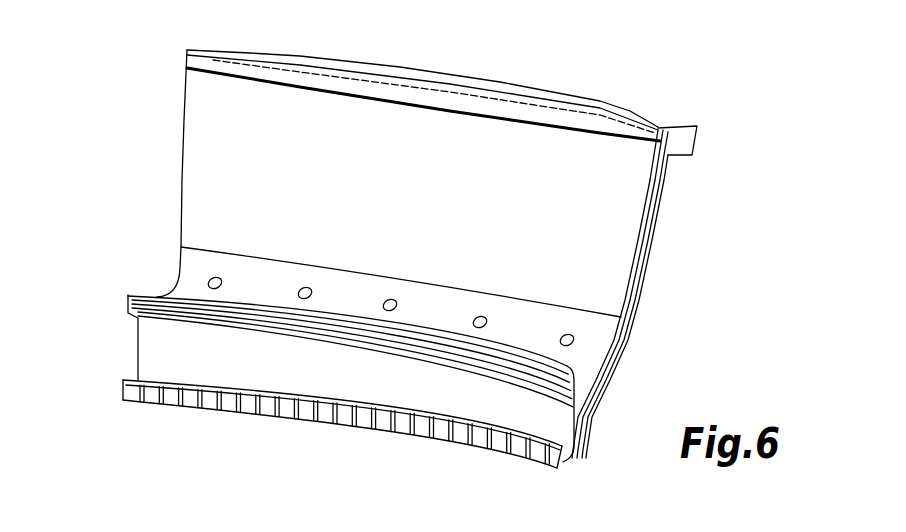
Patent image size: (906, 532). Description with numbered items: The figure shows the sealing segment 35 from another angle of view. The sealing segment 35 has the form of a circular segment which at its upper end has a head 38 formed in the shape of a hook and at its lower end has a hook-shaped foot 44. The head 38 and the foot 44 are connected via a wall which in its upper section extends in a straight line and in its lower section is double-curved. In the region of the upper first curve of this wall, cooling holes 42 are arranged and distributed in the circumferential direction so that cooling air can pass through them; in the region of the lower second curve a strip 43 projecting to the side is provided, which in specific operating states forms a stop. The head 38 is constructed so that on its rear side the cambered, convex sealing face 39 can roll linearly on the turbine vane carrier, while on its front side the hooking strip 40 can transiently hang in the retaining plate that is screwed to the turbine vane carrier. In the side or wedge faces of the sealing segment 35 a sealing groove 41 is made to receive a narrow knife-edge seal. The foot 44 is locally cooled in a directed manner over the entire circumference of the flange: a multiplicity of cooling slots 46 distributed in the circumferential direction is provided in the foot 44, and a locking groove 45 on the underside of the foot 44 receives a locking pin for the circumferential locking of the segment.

The sealing segment 35 is at (434, 216).
The head 38 is at (152, 63).
The sealing face 39 is at (460, 107).
The hooking strip 40 is at (711, 137).
The sealing groove 41 is at (640, 301).
The cooling holes 42 is at (208, 280).
The lower flange 43 is at (114, 300).
The foot 44 is at (97, 389).
The locking groove 45 is at (338, 416).
The cooling slots 46 is at (528, 433).